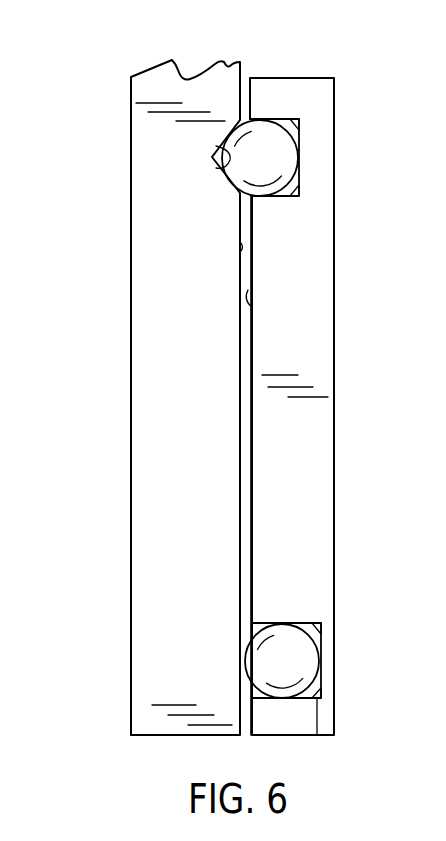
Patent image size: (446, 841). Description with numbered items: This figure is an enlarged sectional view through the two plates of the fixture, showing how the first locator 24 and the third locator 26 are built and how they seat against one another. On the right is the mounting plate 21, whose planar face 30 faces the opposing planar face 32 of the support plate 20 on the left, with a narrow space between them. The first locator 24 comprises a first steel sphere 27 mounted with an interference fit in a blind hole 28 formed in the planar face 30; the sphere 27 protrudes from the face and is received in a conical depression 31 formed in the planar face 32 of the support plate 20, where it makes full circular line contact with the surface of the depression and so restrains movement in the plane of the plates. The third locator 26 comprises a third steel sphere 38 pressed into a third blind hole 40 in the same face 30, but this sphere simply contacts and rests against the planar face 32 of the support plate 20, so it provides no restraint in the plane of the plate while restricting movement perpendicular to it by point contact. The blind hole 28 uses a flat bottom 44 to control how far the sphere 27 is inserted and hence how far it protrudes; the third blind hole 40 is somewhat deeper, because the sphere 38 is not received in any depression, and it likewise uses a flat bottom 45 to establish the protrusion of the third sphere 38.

The support plate 20 is at (143, 371).
The mounting plate 21 is at (322, 440).
The first locator 24 is at (258, 104).
The third locator 26 is at (244, 630).
The first steel sphere 27 is at (285, 150).
The blind hole 28 is at (298, 119).
The planar face 30 is at (252, 307).
The conical depression 31 is at (216, 165).
The planar face 32 is at (238, 252).
The third steel sphere 38 is at (294, 626).
The third blind hole 40 is at (317, 735).
The flat bottom 44 is at (298, 197).
The flat bottom 45 is at (322, 648).